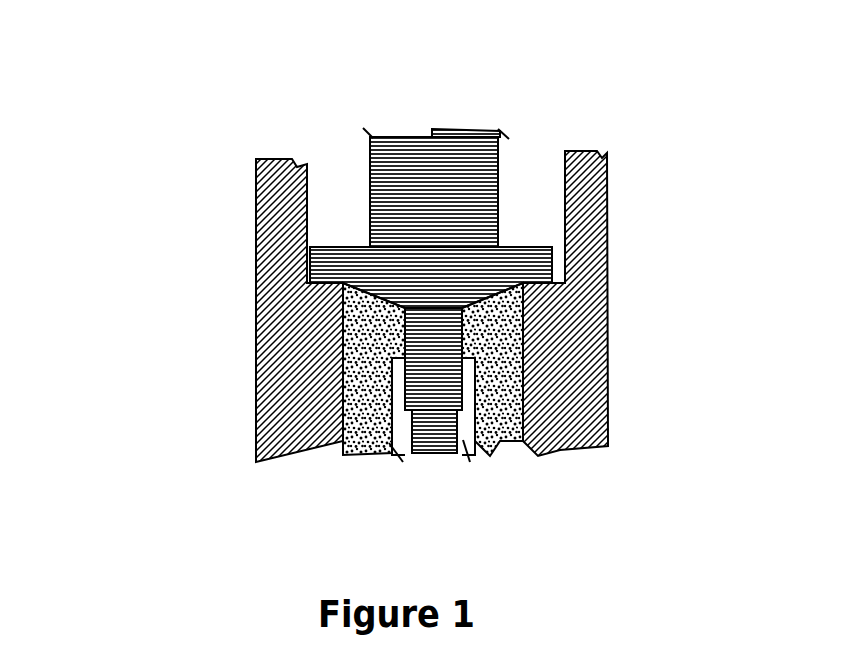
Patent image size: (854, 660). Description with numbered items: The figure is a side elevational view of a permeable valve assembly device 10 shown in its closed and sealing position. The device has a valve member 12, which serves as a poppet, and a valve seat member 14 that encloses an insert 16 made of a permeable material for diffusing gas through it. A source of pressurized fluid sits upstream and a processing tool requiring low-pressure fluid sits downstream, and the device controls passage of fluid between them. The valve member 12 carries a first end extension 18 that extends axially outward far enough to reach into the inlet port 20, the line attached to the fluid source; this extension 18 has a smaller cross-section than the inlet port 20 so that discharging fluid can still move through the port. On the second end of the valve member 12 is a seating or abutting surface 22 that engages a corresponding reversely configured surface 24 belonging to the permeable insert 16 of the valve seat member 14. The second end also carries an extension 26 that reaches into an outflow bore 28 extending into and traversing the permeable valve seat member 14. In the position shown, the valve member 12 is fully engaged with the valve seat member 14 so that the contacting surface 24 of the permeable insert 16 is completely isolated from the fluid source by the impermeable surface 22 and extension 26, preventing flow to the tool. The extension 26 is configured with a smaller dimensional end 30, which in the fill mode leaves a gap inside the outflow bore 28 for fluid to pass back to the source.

The valve assembly device 10 is at (134, 175).
The valve member 12 is at (400, 215).
The valve seat member 14 is at (270, 262).
The insert 16 is at (350, 335).
The first end extension 18 is at (460, 125).
The inlet port 20 is at (528, 173).
The seating surface 22 is at (550, 250).
The reversely configured surface 24 is at (507, 297).
The extension 26 is at (400, 358).
The outflow bore 28 is at (460, 440).
The smaller dimensional end 30 is at (432, 452).